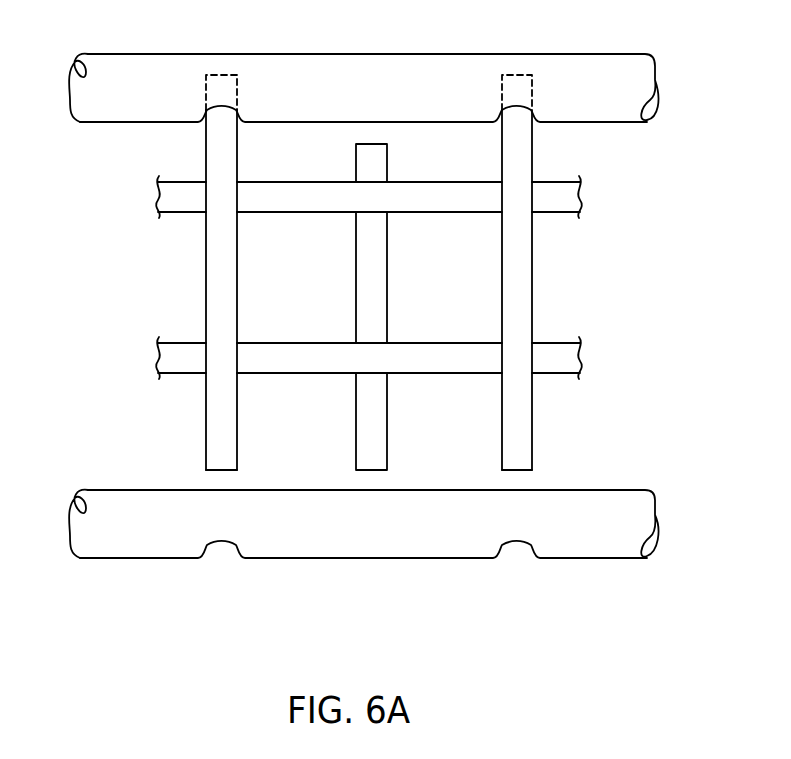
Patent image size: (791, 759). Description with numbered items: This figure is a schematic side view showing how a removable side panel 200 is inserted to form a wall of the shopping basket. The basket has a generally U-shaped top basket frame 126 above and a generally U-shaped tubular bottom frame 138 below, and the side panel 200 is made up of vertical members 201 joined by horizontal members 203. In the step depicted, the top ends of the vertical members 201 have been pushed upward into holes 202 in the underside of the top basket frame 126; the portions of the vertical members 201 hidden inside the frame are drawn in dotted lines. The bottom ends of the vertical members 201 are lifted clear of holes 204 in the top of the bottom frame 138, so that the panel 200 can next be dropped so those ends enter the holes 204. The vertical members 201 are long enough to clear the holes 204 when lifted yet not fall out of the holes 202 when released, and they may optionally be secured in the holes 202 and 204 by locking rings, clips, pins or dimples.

The top basket frame 126 is at (408, 67).
The bottom frame 138 is at (377, 542).
The removable side panel 200 is at (387, 276).
The vertical members 201 is at (207, 273).
The holes 202 is at (240, 125).
The horizontal members 203 is at (430, 342).
The holes 204 is at (203, 477).